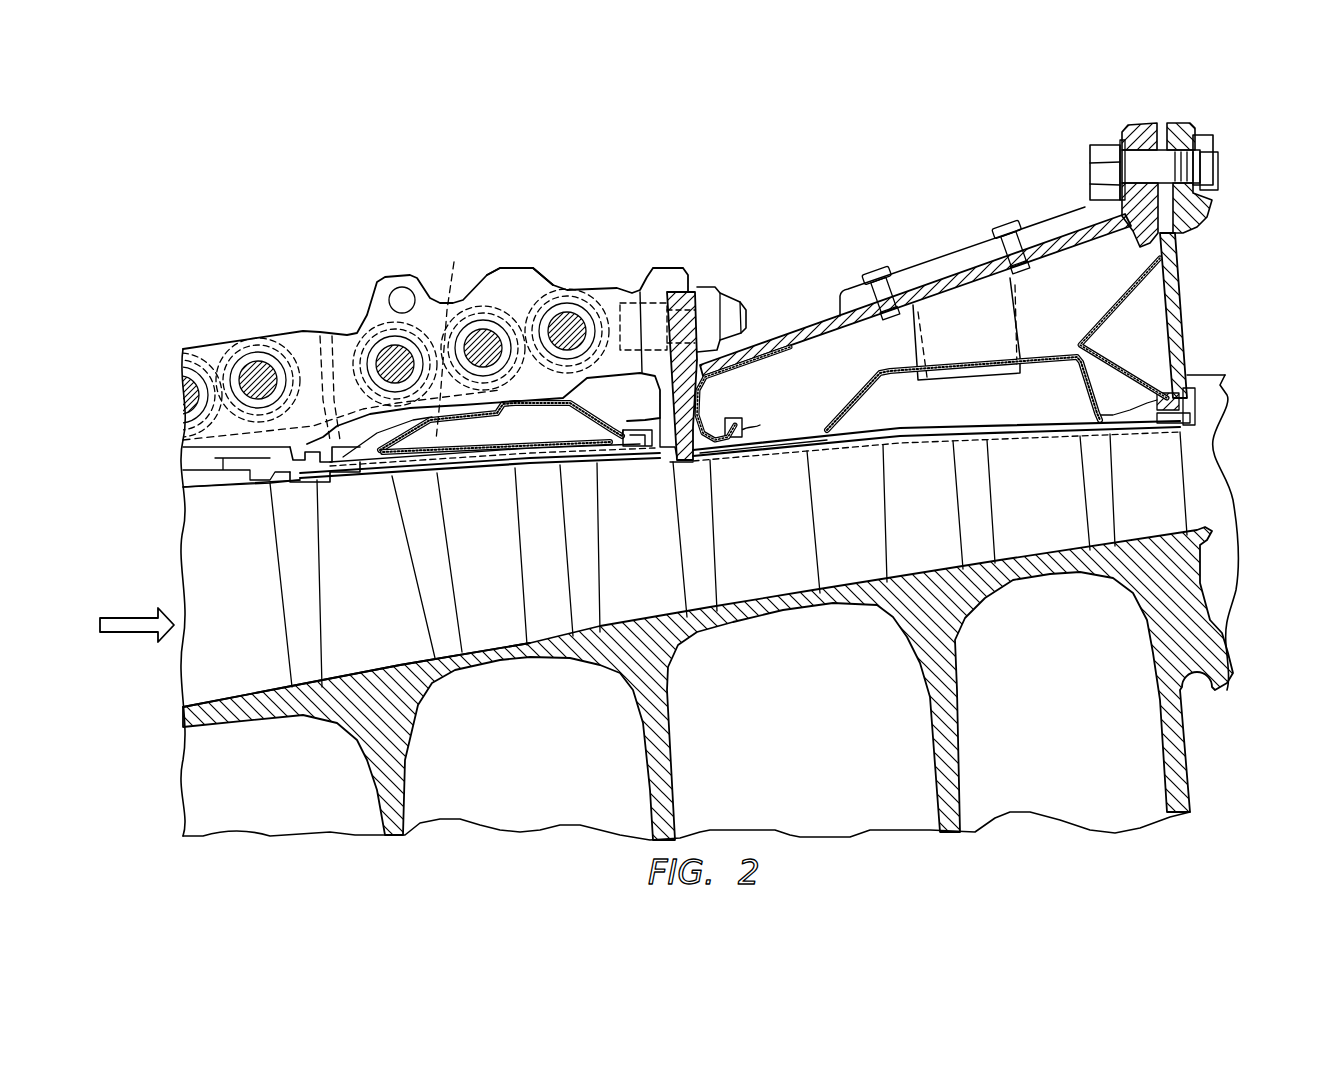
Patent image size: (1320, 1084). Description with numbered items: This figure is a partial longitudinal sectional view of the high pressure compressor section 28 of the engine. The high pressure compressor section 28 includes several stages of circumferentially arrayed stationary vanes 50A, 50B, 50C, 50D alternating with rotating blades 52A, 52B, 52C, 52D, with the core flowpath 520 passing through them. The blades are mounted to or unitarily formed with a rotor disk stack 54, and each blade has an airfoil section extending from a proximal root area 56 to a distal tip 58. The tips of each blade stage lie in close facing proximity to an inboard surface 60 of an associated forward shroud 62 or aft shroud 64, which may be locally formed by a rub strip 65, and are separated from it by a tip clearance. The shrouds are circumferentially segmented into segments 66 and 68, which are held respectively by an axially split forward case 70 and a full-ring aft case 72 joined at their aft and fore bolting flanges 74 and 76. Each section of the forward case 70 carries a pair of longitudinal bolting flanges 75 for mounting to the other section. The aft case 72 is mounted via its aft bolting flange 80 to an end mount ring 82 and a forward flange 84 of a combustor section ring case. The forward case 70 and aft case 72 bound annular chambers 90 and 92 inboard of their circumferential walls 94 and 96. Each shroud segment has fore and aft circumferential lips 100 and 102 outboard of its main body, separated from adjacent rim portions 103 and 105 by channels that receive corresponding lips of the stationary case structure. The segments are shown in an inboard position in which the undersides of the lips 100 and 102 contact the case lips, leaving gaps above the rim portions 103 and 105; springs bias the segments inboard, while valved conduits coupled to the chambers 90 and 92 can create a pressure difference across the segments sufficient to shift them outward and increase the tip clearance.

The high pressure compressor section 28 is at (707, 203).
The stationary vane 50A is at (243, 608).
The stationary vane 50B is at (520, 590).
The stationary vane 50C is at (785, 568).
The stationary vane 50D is at (1062, 505).
The rotating blade 52A is at (380, 601).
The rotating blade 52B is at (660, 571).
The rotating blade 52C is at (940, 548).
The rotating blade 52D is at (1170, 513).
The rotor disk stack 54 is at (657, 665).
The proximal root area 56 is at (403, 665).
The distal tip 58 is at (318, 455).
The inboard surface 60 is at (343, 480).
The forward shroud 62 is at (733, 377).
The aft shroud 64 is at (1163, 380).
The rub strip 65 is at (917, 460).
The shroud segment 66 is at (520, 475).
The shroud segment 68 is at (1025, 433).
The forward case 70 is at (547, 271).
The aft case 72 is at (817, 320).
The aft bolting flange 74 is at (662, 350).
The longitudinal bolting flange 75 is at (513, 282).
The fore bolting flange 76 is at (693, 292).
The aft bolting flange 80 is at (1120, 133).
The end mount ring 82 is at (1155, 240).
The forward flange 84 is at (1178, 125).
The annular chamber 90 is at (677, 370).
The annular chamber 92 is at (1150, 360).
The circumferential wall 94 is at (450, 338).
The circumferential wall 96 is at (833, 340).
The fore circumferential lip 100 is at (315, 442).
The aft circumferential lip 102 is at (648, 458).
The rim portion 103 is at (287, 480).
The rim portion 105 is at (677, 460).
The core flowpath 520 is at (125, 613).